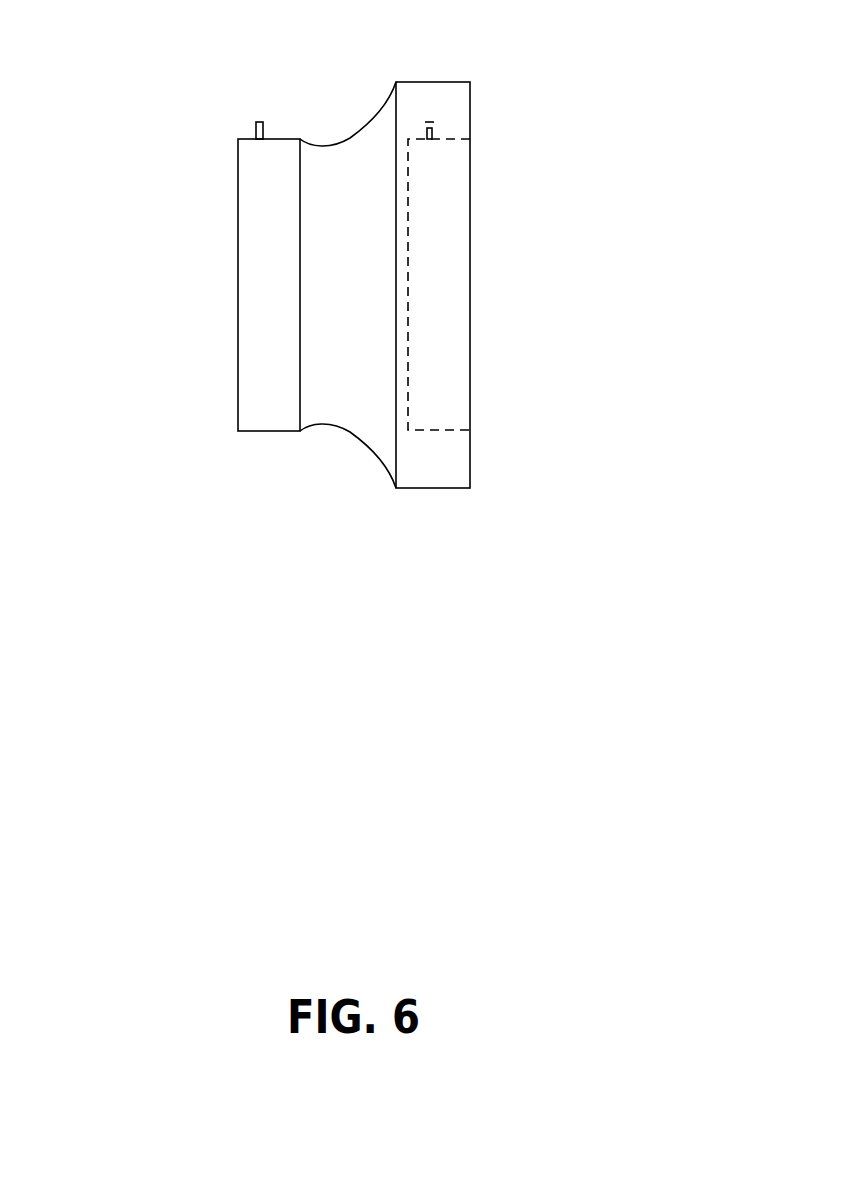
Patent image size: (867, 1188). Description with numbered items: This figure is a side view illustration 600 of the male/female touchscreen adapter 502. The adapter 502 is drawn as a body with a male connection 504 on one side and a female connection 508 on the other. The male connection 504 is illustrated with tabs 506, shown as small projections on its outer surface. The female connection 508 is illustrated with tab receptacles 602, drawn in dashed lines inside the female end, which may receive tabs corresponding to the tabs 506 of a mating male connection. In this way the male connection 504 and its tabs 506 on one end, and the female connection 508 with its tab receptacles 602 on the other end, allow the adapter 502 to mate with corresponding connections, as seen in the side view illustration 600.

The adapter 502 is at (432, 488).
The male connection 504 is at (258, 304).
The tabs 506 is at (256, 128).
The female connection 508 is at (427, 430).
The side view illustration 600 is at (524, 627).
The tab receptacles 602 is at (435, 128).